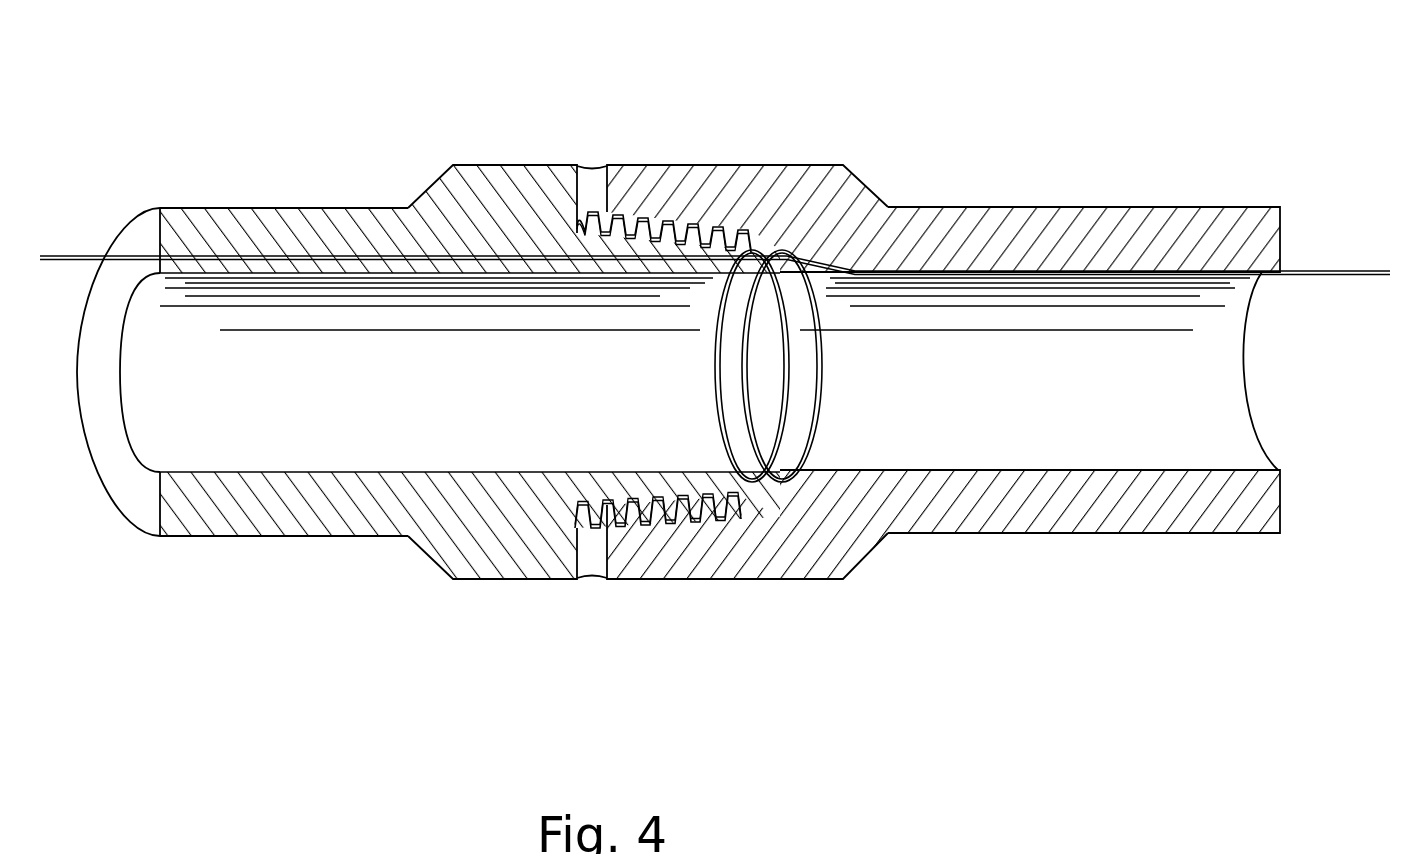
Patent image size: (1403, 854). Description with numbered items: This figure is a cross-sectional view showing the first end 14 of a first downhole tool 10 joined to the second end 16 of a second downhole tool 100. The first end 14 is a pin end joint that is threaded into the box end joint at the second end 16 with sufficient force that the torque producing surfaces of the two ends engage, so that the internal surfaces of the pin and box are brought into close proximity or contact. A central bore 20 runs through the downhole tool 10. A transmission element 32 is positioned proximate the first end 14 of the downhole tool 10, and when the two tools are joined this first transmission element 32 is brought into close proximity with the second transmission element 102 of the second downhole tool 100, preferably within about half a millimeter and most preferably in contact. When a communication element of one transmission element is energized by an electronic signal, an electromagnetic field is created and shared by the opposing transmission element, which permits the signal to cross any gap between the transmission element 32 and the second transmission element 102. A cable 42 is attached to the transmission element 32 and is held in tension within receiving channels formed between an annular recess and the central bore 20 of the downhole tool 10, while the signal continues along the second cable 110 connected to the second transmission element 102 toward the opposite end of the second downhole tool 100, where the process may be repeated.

The downhole tool 10 is at (160, 563).
The first end 14 is at (498, 165).
The second end 16 is at (699, 165).
The central bore 20 is at (303, 380).
The transmission element 32 is at (773, 385).
The cable 42 is at (88, 256).
The second downhole tool 100 is at (610, 595).
The second transmission element 102 is at (823, 357).
The second cable 110 is at (1318, 271).